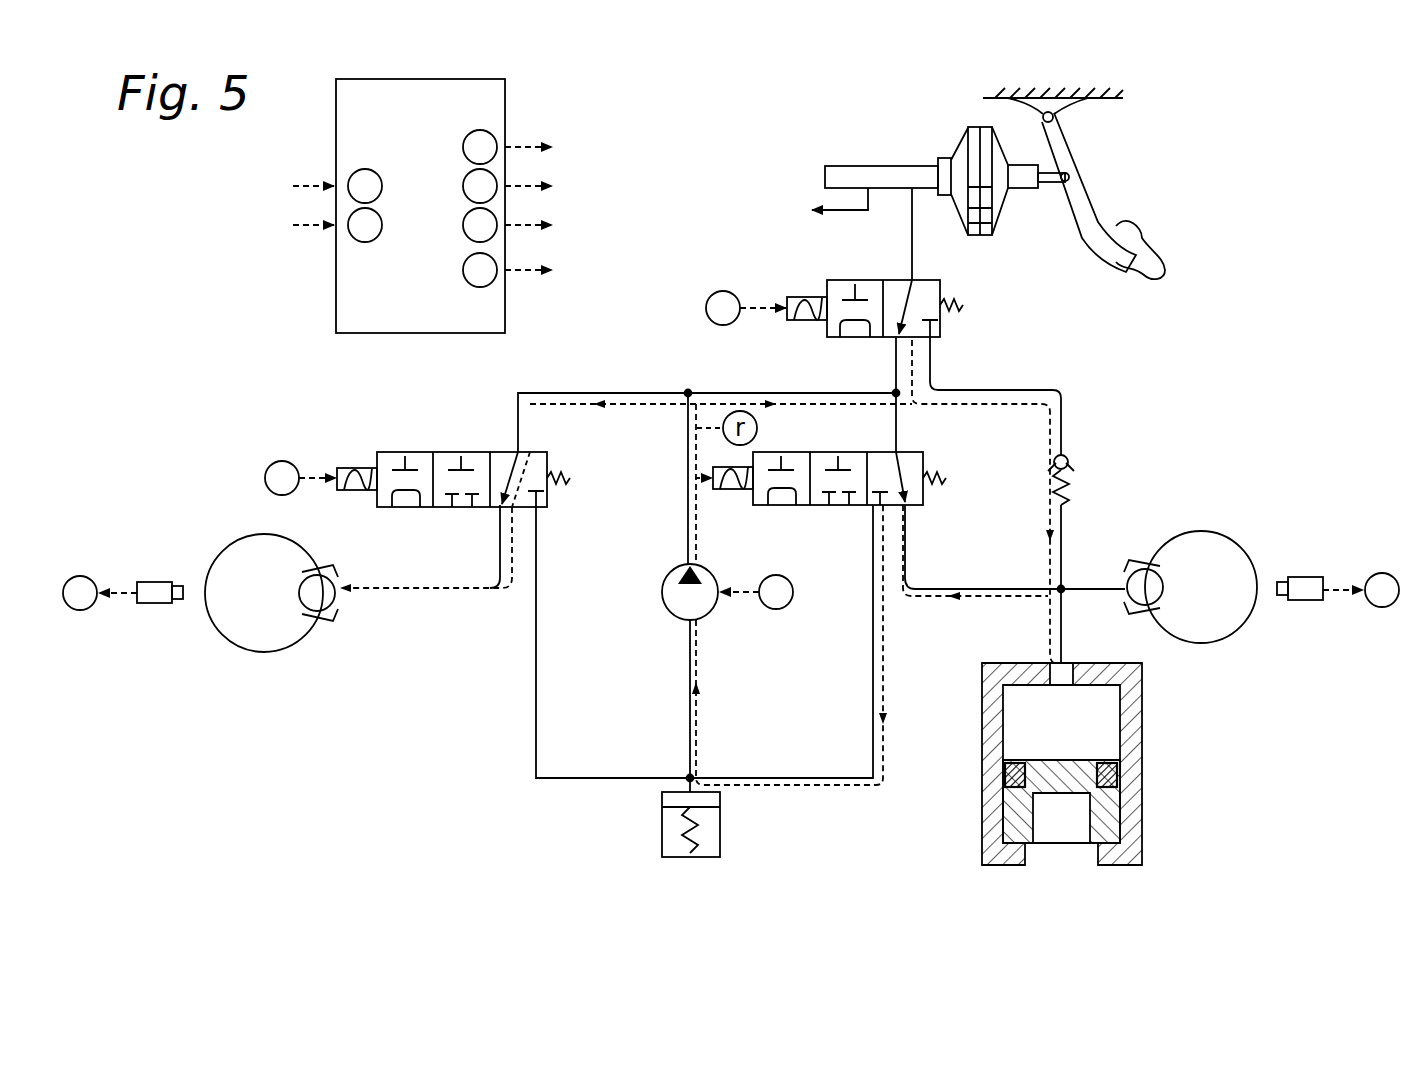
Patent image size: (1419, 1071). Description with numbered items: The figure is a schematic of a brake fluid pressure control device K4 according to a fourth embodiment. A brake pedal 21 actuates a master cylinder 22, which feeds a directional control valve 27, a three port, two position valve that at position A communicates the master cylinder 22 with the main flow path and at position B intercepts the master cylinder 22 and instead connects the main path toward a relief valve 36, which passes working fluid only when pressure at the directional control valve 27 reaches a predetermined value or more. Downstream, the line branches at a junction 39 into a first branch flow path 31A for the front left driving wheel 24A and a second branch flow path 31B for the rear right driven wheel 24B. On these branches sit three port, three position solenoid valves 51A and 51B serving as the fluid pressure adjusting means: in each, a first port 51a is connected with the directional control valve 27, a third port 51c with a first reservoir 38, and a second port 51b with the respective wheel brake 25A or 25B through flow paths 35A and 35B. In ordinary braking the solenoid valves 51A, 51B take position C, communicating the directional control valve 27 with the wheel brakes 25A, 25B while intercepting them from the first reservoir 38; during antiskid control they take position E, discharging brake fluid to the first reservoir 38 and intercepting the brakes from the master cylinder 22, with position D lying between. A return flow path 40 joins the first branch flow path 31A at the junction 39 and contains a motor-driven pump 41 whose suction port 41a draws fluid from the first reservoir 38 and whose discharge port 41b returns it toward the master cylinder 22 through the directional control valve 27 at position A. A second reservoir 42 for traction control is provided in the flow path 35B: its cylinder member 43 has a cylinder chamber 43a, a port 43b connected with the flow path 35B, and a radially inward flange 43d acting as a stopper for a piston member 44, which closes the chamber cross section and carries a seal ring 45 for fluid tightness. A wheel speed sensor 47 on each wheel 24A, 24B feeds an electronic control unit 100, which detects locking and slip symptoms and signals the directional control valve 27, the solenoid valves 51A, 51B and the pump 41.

The electronic control unit 100 is at (480, 79).
The brake fluid pressure control device K4 is at (298, 392).
The brake pedal 21 is at (1148, 244).
The master cylinder 22 is at (882, 153).
The directional control valve 27 is at (806, 277).
The position A is at (946, 292).
The position B is at (870, 282).
The position C is at (540, 452).
The position D is at (470, 450).
The position E is at (395, 450).
The junction 39 is at (688, 390).
The solenoid valve 51A is at (436, 440).
The solenoid valve 51B is at (930, 450).
The first port 51a is at (518, 450).
The second port 51b is at (500, 513).
The third port 51c is at (538, 512).
The relief valve 36 is at (1072, 458).
The flow path 35A is at (420, 588).
The flow path 35B is at (1090, 588).
The return flow path 40 is at (692, 493).
The pump 41 is at (712, 612).
The suction port 41a is at (686, 618).
The discharge port 41b is at (686, 565).
The first branch flow path 31A is at (574, 780).
The second branch flow path 31B is at (846, 784).
The first reservoir 38 is at (720, 832).
The front left driving wheel 24A is at (212, 562).
The rear right driven wheel 24B is at (1200, 531).
The wheel brake 25A is at (326, 614).
The wheel brake 25B is at (1142, 607).
The wheel speed sensor 47 is at (162, 604).
The second reservoir 42 is at (1168, 802).
The cylinder member 43 is at (1142, 752).
The cylinder chamber 43a is at (1110, 725).
The port 43b is at (1050, 650).
The flange 43d is at (1005, 866).
The piston member 44 is at (1040, 760).
The seal ring 45 is at (1112, 790).